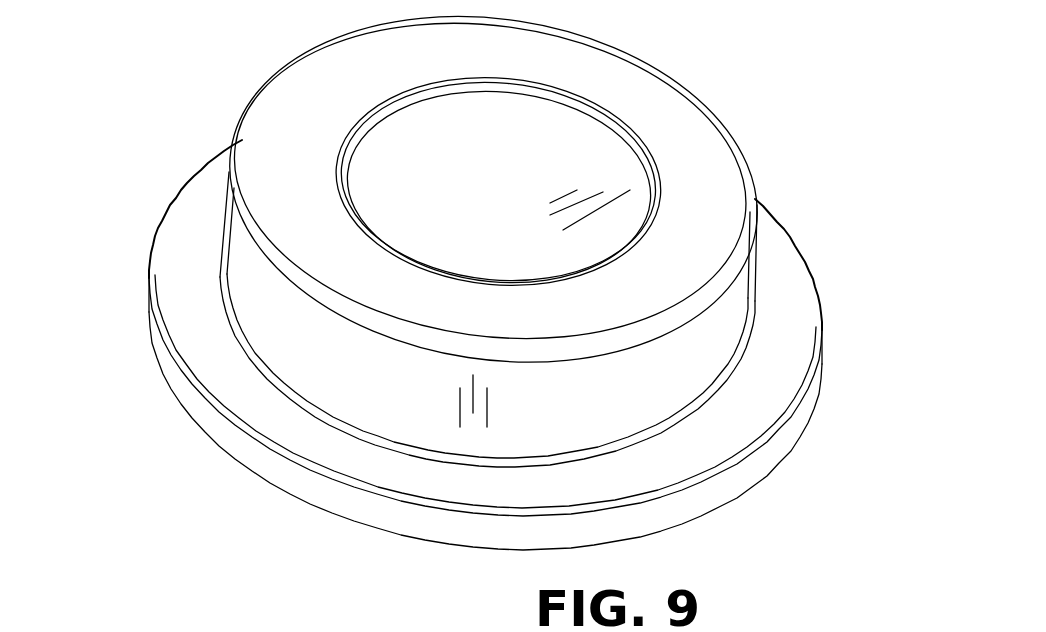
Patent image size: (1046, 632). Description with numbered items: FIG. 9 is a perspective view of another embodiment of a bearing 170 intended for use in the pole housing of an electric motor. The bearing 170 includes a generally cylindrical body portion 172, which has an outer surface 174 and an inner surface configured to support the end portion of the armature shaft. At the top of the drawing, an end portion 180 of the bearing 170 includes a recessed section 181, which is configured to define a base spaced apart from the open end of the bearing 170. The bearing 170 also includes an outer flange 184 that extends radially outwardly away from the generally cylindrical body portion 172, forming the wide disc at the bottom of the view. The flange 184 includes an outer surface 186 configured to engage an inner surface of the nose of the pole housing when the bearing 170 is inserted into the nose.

The bearing 170 is at (773, 95).
The generally cylindrical body portion 172 is at (290, 312).
The outer surface 174 is at (632, 382).
The end portion 180 is at (312, 113).
The recessed section 181 is at (512, 204).
The outer flange 184 is at (777, 320).
The outer surface 186 is at (302, 480).